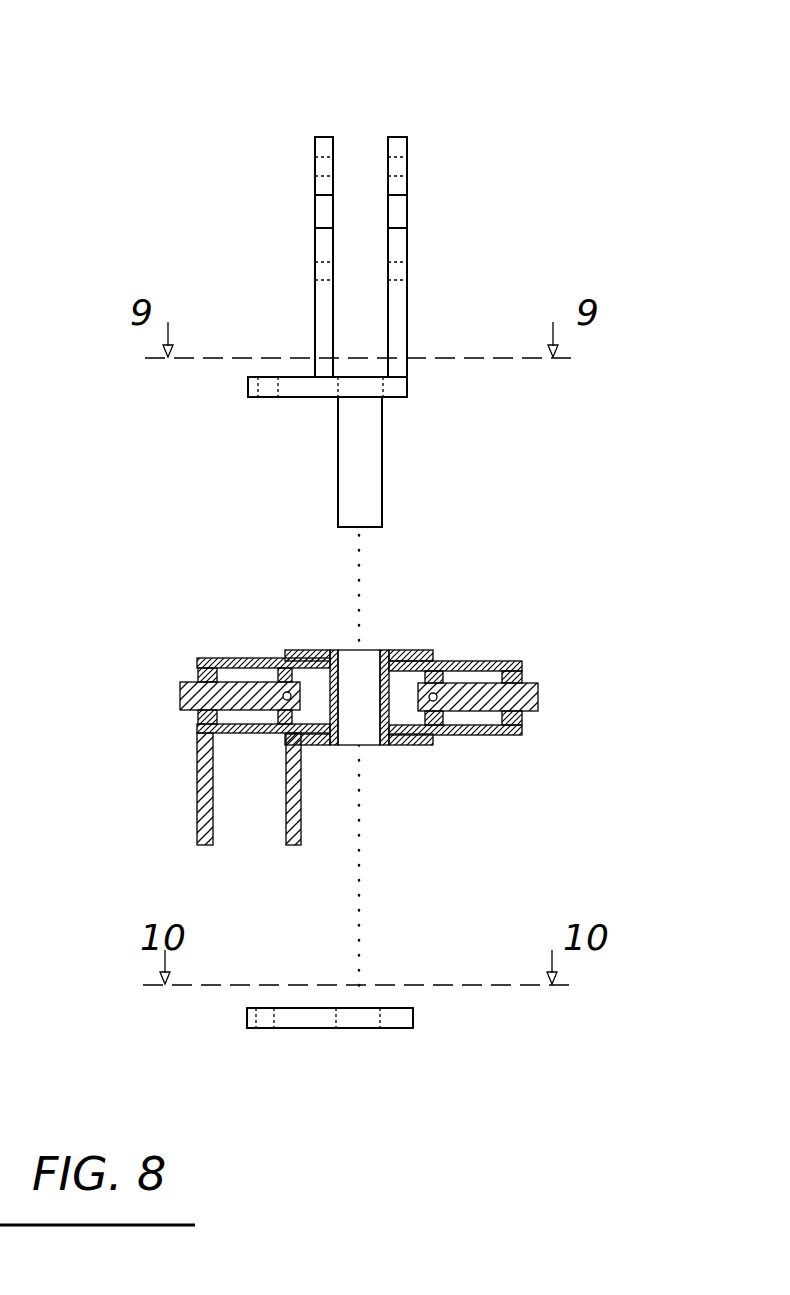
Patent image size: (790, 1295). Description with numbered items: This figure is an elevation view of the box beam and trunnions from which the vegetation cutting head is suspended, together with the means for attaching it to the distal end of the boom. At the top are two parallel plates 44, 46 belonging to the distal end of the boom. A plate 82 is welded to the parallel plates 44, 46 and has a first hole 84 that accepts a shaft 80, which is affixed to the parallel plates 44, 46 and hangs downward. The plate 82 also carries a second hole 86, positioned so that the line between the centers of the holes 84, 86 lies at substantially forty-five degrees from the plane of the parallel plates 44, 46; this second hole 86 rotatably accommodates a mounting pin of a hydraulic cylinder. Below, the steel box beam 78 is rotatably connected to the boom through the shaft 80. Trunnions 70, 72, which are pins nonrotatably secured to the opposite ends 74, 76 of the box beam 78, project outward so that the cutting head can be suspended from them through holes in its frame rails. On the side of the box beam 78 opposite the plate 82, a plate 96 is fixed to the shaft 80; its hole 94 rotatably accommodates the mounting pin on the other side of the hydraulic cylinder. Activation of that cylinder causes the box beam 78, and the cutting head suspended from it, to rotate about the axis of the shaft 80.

The parallel plate 44 is at (395, 133).
The parallel plate 46 is at (320, 133).
The trunnion 70 is at (180, 692).
The trunnion 72 is at (543, 693).
The end of box beam 74 is at (197, 715).
The end of box beam 76 is at (522, 720).
The box beam 78 is at (470, 733).
The shaft 80 is at (337, 495).
The plate 82 is at (417, 387).
The first hole 84 is at (429, 457).
The second hole 86 is at (219, 425).
The hole 94 is at (301, 1064).
The plate 96 is at (413, 1015).